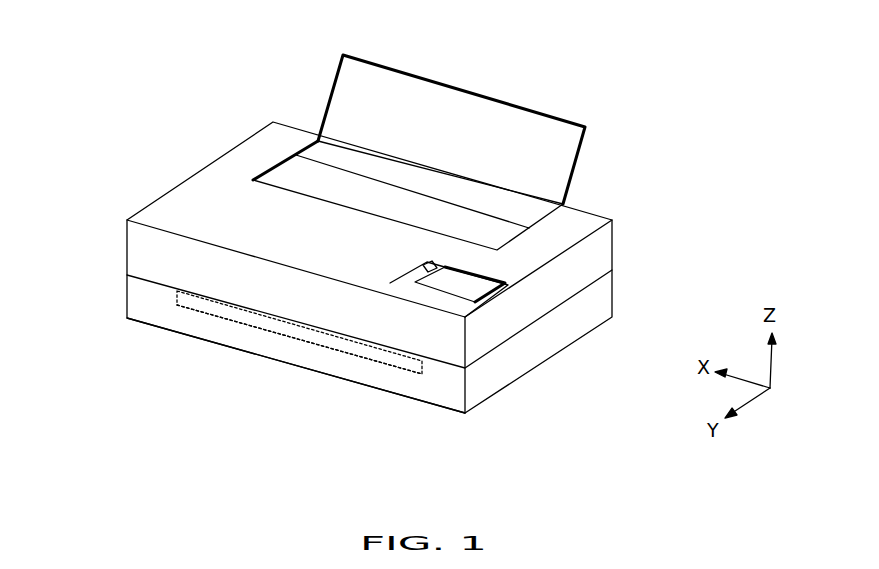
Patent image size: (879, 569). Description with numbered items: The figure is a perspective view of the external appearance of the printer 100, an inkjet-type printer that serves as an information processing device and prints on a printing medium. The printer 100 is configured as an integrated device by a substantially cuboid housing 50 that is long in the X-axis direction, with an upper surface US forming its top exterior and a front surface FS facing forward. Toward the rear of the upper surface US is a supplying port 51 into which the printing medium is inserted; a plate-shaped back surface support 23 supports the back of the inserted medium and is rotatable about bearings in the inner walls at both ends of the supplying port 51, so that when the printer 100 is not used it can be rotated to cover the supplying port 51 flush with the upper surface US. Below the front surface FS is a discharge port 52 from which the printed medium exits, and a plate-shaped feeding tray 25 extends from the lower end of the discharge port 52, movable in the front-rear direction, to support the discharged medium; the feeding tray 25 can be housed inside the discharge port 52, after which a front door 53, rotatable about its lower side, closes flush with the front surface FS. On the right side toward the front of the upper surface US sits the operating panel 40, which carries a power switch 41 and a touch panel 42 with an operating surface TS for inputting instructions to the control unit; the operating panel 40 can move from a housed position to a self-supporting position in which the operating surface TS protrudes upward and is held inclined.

The printer 100 is at (172, 70).
The housing 50 is at (333, 257).
The upper surface US is at (220, 202).
The front surface FS is at (143, 252).
The front door 53 is at (160, 312).
The back surface support 23 is at (463, 112).
The supplying port 51 is at (338, 160).
The operating panel 40 is at (441, 228).
The power switch 41 is at (428, 266).
The touch panel 42 is at (460, 282).
The operating surface TS is at (463, 275).
The discharge port 52 is at (262, 330).
The feeding tray 25 is at (340, 352).